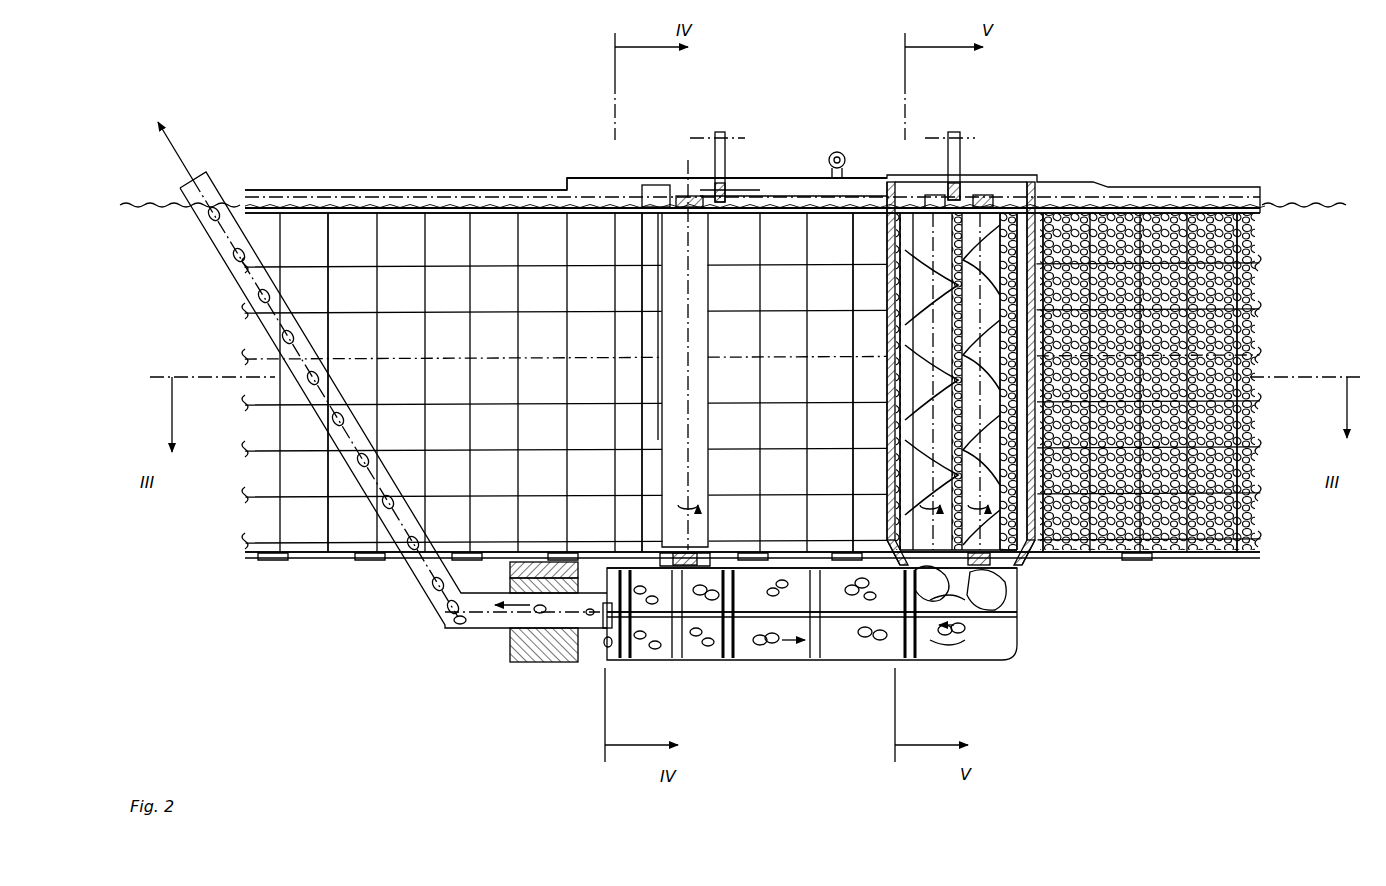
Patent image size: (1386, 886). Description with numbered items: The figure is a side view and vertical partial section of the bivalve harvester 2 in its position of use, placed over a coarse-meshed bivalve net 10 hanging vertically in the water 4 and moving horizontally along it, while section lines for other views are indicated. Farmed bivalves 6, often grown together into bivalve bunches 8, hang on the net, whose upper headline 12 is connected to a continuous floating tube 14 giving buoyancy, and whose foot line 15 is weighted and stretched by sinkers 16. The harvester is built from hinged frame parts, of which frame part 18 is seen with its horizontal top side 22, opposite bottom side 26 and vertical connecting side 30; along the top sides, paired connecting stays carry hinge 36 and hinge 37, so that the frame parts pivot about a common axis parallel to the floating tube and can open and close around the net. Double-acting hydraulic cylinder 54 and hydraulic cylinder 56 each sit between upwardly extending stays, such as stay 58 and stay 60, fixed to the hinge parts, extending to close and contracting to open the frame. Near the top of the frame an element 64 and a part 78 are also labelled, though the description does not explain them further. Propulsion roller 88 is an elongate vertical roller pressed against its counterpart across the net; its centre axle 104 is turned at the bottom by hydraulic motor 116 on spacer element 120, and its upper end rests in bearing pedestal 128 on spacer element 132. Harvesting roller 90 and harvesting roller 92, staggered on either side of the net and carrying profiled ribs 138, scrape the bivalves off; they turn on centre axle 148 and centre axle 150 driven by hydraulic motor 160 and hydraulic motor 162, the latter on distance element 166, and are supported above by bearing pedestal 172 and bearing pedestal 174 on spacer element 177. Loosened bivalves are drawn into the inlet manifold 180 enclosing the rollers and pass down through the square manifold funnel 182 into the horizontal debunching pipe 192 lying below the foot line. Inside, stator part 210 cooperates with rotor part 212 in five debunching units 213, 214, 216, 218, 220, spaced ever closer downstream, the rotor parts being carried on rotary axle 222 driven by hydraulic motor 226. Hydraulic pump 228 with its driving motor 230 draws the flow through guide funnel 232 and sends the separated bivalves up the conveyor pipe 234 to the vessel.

The bivalve harvester 2 is at (770, 123).
The water 4 is at (400, 245).
The bivalves 6 is at (435, 580).
The bivalve bunches 8 is at (895, 425).
The bivalve net 10 is at (345, 290).
The headline 12 is at (358, 210).
The floating tube 14 is at (300, 190).
The foot line 15 is at (303, 555).
The sinkers 16 is at (268, 560).
The frame part 18 is at (638, 298).
The top side 22 is at (653, 185).
The bottom side 26 is at (700, 600).
The connecting side 30 is at (650, 330).
The hinge 36 is at (722, 190).
The hinge 37 is at (960, 190).
The hydraulic cylinder 54 is at (715, 138).
The hydraulic cylinder 56 is at (955, 140).
The stay 58 is at (720, 150).
The stay 60 is at (930, 138).
The lifting eye 64 is at (837, 150).
The wall plate 78 is at (515, 270).
The propulsion roller 88 is at (680, 440).
The harvesting roller 90 is at (900, 350).
The harvesting roller 92 is at (888, 230).
The centre axle 104 is at (665, 235).
The hydraulic motor 116 is at (690, 580).
The spacer element 120 is at (678, 560).
The bearing pedestal 128 is at (665, 195).
The spacer element 132 is at (690, 196).
The profiled ribs 138 is at (905, 380).
The centre axle 148 is at (888, 480).
The centre axle 150 is at (1005, 210).
The hydraulic motor 160 is at (888, 500).
The hydraulic motor 162 is at (1010, 565).
The distance element 166 is at (990, 570).
The bearing pedestal 172 is at (928, 200).
The bearing pedestal 174 is at (1000, 205).
The spacer element 177 is at (985, 203).
The inlet manifold 180 is at (880, 225).
The manifold funnel 182 is at (890, 560).
The debunching pipe 192 is at (960, 661).
The stator part 210 is at (790, 600).
The rotor part 212 is at (850, 600).
The debunching unit 213 is at (910, 658).
The debunching unit 214 is at (815, 658).
The debunching unit 216 is at (728, 658).
The debunching unit 218 is at (678, 658).
The debunching unit 220 is at (625, 658).
The rotary axle 222 is at (705, 632).
The hydraulic motor 226 is at (605, 620).
The hydraulic pump 228 is at (515, 645).
The hydraulic driving motor 230 is at (535, 562).
The guide funnel 232 is at (590, 573).
The conveyor pipe 234 is at (200, 235).